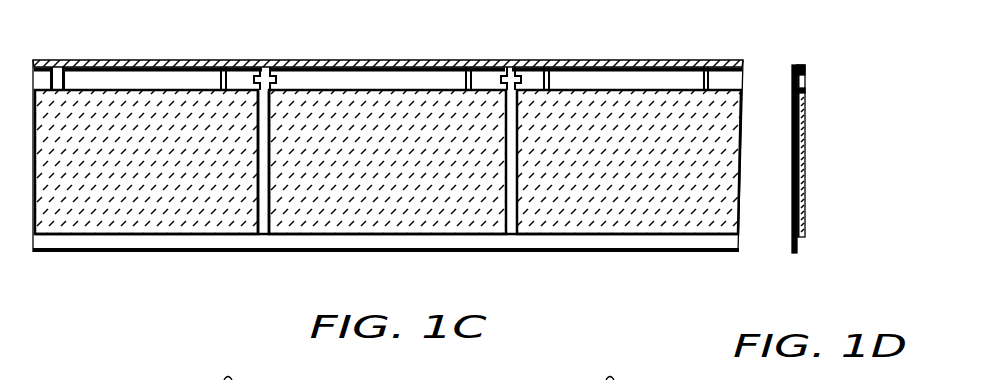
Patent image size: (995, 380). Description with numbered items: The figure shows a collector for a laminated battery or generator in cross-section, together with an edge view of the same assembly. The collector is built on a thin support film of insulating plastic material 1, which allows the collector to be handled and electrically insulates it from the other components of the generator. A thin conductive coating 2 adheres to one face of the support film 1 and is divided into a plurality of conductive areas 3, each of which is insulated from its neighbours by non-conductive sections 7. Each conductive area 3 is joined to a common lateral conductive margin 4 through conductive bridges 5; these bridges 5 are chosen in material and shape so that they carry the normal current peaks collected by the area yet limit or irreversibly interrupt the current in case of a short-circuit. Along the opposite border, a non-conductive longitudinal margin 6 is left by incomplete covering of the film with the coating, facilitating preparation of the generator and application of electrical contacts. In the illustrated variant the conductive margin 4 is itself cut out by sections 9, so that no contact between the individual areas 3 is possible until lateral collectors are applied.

In FIG. 1C, the support film 1 is at (727, 252).
In FIG. 1D, the support film 1 is at (800, 240).
In FIG. 1C, the conductive coating 2 is at (640, 105).
In FIG. 1D, the conductive coating 2 is at (803, 68).
In FIG. 1C, the conductive areas 3 is at (441, 205).
In FIG. 1C, the common lateral conductive margin 4 is at (604, 70).
In FIG. 1C, the conductive bridges 5 is at (300, 68).
In FIG. 1C, the non-conductive longitudinal margin 6 is at (145, 243).
In FIG. 1C, the non-conductive sections 7 is at (267, 202).
In FIG. 1C, the sections 9 is at (512, 70).